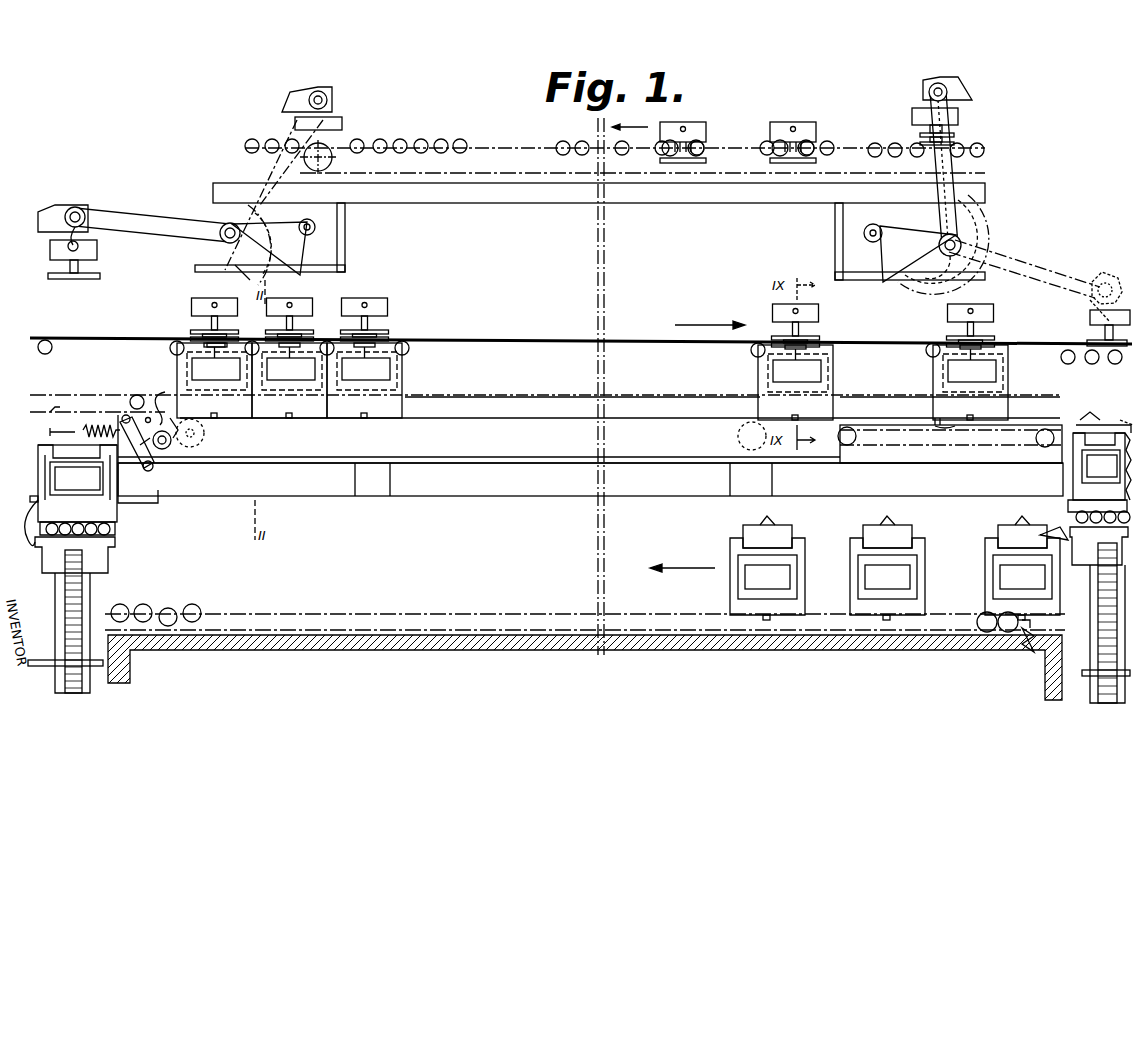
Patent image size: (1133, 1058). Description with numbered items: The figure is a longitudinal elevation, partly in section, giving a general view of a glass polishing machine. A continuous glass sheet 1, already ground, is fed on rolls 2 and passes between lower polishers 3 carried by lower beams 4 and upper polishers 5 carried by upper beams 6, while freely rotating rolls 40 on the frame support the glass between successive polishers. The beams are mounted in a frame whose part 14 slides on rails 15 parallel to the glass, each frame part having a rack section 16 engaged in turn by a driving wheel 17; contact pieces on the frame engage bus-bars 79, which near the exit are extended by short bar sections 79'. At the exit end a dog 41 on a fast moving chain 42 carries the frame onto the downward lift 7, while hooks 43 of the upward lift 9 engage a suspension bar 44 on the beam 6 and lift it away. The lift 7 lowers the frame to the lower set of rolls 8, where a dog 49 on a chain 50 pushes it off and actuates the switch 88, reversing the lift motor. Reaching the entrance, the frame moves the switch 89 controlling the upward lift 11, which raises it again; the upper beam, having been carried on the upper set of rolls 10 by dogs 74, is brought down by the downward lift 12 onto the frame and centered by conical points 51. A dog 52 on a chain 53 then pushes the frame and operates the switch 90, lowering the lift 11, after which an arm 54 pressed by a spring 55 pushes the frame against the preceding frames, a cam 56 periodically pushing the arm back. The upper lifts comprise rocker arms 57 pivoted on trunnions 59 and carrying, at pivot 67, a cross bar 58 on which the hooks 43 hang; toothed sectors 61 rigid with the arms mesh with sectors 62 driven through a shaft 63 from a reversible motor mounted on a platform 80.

The glass sheet 1 is at (120, 338).
The rolls 2 is at (50, 352).
The lower polishers 3 is at (185, 352).
The lower beams 4 is at (195, 370).
The upper polishers 5 is at (80, 280).
The upper beams 6 is at (70, 262).
The downward lift 7 is at (1054, 539).
The lower set of rolls 8 is at (192, 605).
The upward lift 9 is at (1024, 263).
The upper set of rolls 10 is at (418, 140).
The upward lift 11 is at (100, 548).
The downward lift 12 is at (260, 178).
The frame part 14 is at (140, 352).
The rails 15 is at (660, 460).
The rack section 16 is at (305, 418).
The driving wheel 17 is at (205, 436).
The rolls 40 is at (408, 353).
The dog 41 is at (935, 422).
The chain 42 is at (920, 445).
The hooks 43 is at (80, 255).
The suspension bar 44 is at (80, 250).
The dog 49 is at (888, 618).
The chain 50 is at (700, 625).
The conical points 51 is at (1110, 412).
The dog 52 is at (97, 425).
The chain 53 is at (60, 392).
The arm 54 is at (140, 462).
The spring 55 is at (90, 425).
The cam 56 is at (165, 450).
The rocker arms 57 is at (150, 218).
The cross bar 58 is at (55, 212).
The trunnions 59 is at (222, 240).
The toothed sectors 61 is at (240, 262).
The sectors 62 is at (290, 270).
The shaft 63 is at (318, 230).
The pivot 67 is at (78, 212).
The dogs 74 is at (700, 138).
The bus-bars 79 is at (620, 387).
The short bar sections 79' is at (950, 384).
The platform 80 is at (330, 262).
The switch 88 is at (1035, 640).
The switch 89 is at (28, 532).
The switch 90 is at (147, 398).